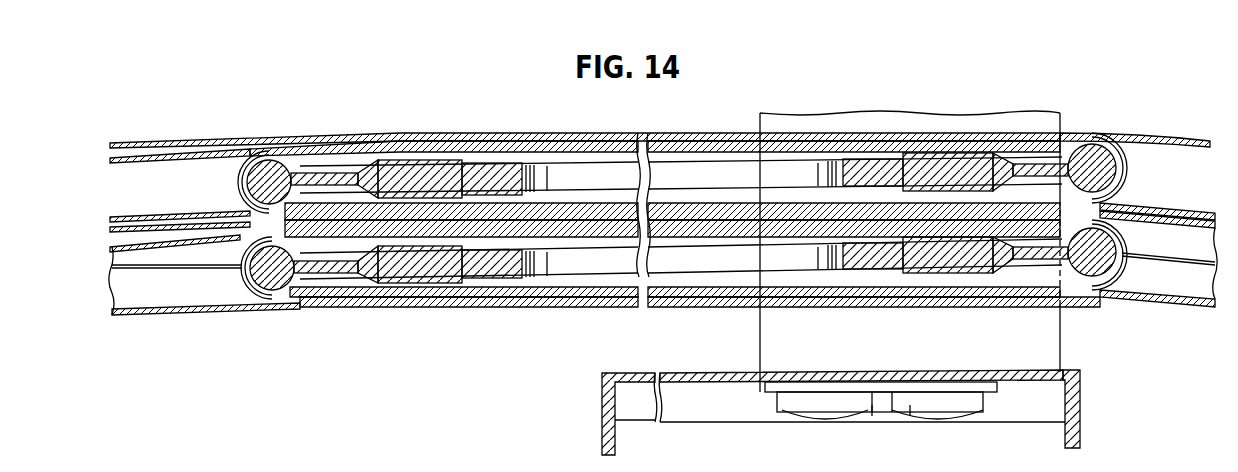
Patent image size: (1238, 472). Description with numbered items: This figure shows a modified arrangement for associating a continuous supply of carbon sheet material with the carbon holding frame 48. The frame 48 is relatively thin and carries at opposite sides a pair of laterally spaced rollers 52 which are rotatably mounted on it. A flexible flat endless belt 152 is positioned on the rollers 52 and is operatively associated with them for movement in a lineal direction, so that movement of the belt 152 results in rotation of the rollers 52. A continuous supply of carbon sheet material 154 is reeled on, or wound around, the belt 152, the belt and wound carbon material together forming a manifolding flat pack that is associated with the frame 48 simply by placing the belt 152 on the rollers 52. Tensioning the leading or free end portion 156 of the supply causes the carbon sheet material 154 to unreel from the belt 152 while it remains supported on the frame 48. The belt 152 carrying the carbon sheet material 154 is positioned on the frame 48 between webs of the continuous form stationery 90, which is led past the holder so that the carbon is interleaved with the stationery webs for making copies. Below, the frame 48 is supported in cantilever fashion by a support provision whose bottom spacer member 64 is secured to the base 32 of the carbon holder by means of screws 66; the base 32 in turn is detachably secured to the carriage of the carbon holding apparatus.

The continuous form stationery 90 is at (179, 142).
The continuous supply of carbon sheet material 154 is at (338, 141).
The carbon holding frame 48 is at (481, 165).
The leading or free end portion 156 is at (193, 157).
The rollers 52 is at (258, 185).
The flexible flat endless belt 152 is at (745, 151).
The bottom spacer member 64 is at (1060, 327).
The base 32 is at (742, 371).
The screws 66 is at (898, 417).